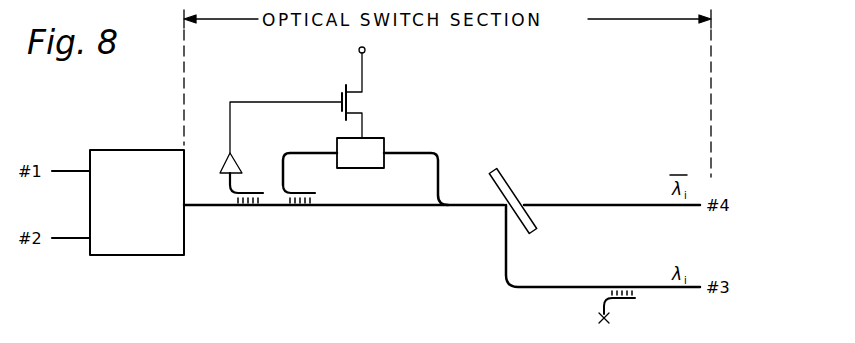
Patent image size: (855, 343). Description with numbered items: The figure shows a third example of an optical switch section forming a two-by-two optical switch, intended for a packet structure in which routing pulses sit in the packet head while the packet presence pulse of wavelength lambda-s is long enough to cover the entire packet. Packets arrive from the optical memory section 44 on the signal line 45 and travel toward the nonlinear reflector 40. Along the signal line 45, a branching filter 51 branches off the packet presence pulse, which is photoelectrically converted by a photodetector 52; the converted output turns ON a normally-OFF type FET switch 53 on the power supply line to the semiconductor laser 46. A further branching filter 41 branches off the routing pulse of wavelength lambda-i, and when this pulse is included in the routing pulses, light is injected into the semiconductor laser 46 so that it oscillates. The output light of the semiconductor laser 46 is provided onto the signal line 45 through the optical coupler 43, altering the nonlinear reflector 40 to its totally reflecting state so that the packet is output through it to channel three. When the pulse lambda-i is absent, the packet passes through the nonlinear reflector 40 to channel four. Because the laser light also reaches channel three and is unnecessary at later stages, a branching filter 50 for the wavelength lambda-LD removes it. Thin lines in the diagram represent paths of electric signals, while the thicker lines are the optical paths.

The nonlinear reflector 40 is at (511, 171).
The branching filter 41 is at (301, 212).
The optical coupler 43 is at (447, 212).
The optical memory section 44 is at (146, 150).
The signal line 45 is at (200, 212).
The semiconductor laser 46 is at (383, 150).
The branching filter 50 is at (622, 283).
The branching filter 51 is at (246, 212).
The photodetector 52 is at (237, 160).
The normally-OFF type FET switch 53 is at (340, 96).